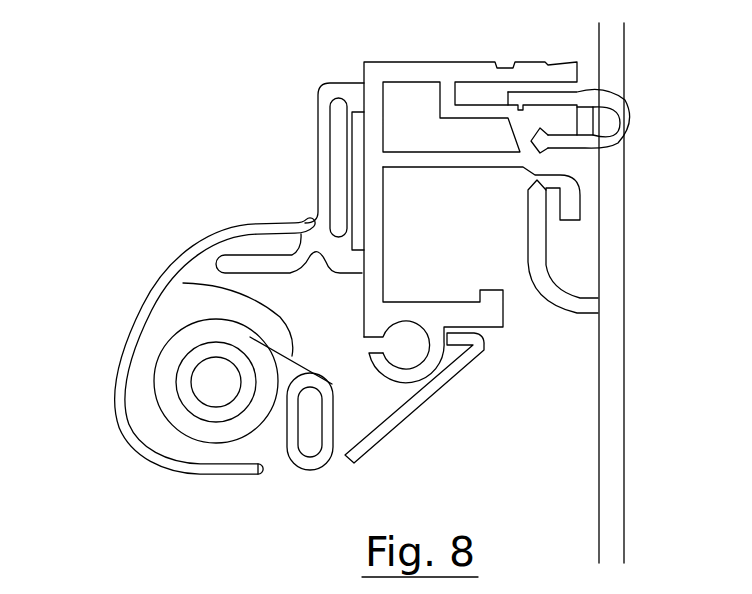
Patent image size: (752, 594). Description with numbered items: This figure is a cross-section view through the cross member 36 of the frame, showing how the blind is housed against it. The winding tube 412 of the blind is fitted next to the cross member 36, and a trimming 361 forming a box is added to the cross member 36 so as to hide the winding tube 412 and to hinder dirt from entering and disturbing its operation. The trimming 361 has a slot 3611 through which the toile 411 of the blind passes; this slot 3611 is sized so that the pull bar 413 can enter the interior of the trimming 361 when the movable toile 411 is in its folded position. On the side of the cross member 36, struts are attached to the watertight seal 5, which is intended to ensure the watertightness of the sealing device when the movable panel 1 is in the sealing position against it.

The cross member 36 is at (412, 72).
The trimming 361 is at (204, 247).
The slot 3611 is at (277, 474).
The toile 411 is at (181, 356).
The winding tube 412 is at (180, 354).
The pull bar 413 is at (330, 462).
The watertight seal 5 is at (590, 90).
The movable panel 1 is at (627, 421).